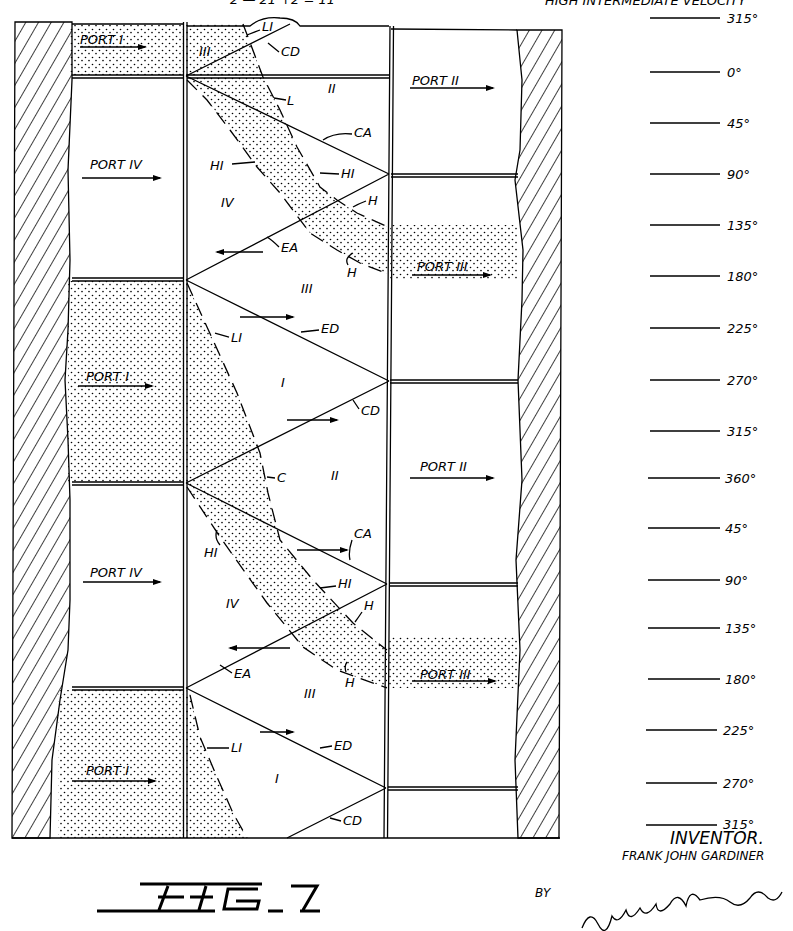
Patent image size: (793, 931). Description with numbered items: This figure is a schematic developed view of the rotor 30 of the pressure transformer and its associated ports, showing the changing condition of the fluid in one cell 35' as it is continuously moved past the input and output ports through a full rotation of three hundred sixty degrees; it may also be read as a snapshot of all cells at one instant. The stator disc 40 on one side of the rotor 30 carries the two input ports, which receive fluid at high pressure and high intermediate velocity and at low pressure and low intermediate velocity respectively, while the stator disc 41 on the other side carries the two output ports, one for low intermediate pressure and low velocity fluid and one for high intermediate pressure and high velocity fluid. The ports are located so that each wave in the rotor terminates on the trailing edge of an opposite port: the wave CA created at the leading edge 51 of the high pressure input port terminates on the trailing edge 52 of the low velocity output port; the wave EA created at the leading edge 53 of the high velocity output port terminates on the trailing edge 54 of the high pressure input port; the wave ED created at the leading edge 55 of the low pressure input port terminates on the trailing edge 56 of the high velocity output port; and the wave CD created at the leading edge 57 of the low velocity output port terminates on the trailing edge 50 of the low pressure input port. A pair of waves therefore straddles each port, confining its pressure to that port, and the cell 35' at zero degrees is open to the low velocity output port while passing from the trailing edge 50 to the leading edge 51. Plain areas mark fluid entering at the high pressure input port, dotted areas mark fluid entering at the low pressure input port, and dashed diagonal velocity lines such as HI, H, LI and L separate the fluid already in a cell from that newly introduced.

The stator disc 40 is at (47, 28).
The stator disc 41 is at (557, 61).
The rotor 30 is at (287, 149).
The cell 35' is at (288, 64).
The trailing edge of port I 50 is at (160, 75).
The leading edge of port IV 51 is at (143, 80).
The trailing edge of port II 52 is at (464, 173).
The leading edge of port III 53 is at (455, 178).
The trailing edge of port IV 54 is at (143, 278).
The leading edge of port I 55 is at (128, 283).
The trailing edge of port III 56 is at (450, 380).
The leading edge of port II 57 is at (424, 385).